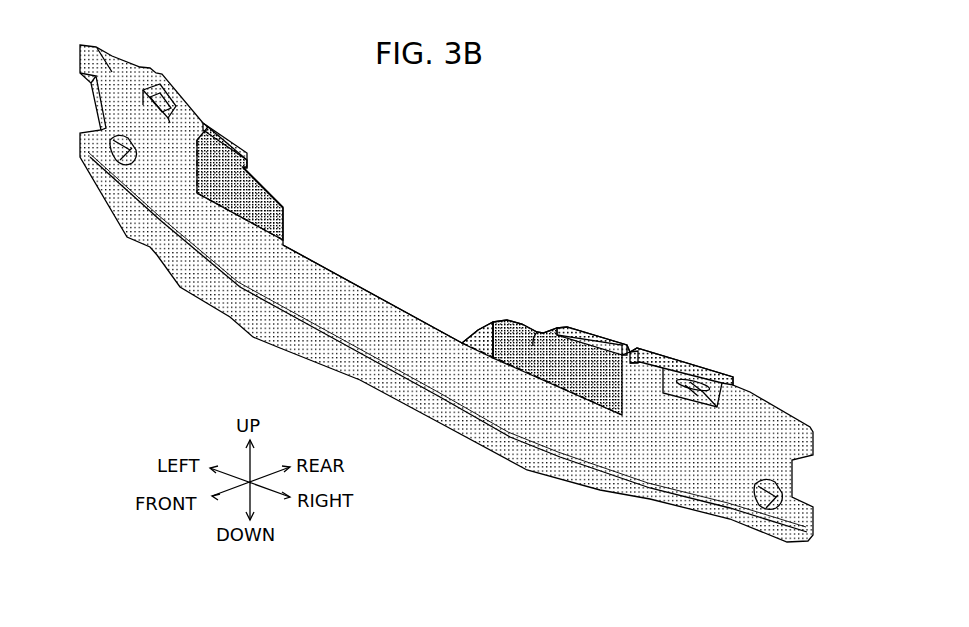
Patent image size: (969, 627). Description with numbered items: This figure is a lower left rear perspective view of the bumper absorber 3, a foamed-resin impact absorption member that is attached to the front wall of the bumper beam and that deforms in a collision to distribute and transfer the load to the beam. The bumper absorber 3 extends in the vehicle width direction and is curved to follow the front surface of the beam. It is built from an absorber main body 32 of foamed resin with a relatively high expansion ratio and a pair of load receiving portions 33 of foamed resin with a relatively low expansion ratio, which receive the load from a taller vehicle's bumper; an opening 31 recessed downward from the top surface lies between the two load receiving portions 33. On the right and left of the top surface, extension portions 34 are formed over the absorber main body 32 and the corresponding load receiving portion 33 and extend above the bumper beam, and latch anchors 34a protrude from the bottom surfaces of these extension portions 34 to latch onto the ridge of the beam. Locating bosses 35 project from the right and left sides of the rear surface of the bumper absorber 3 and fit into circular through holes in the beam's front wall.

The bumper absorber 3 is at (420, 303).
The opening 31 is at (360, 290).
The absorber main body 32 is at (410, 353).
The load receiving portion 33 is at (281, 207).
The extension portion 34 is at (233, 137).
The latch anchor 34a is at (180, 85).
The locating boss 35 is at (141, 150).